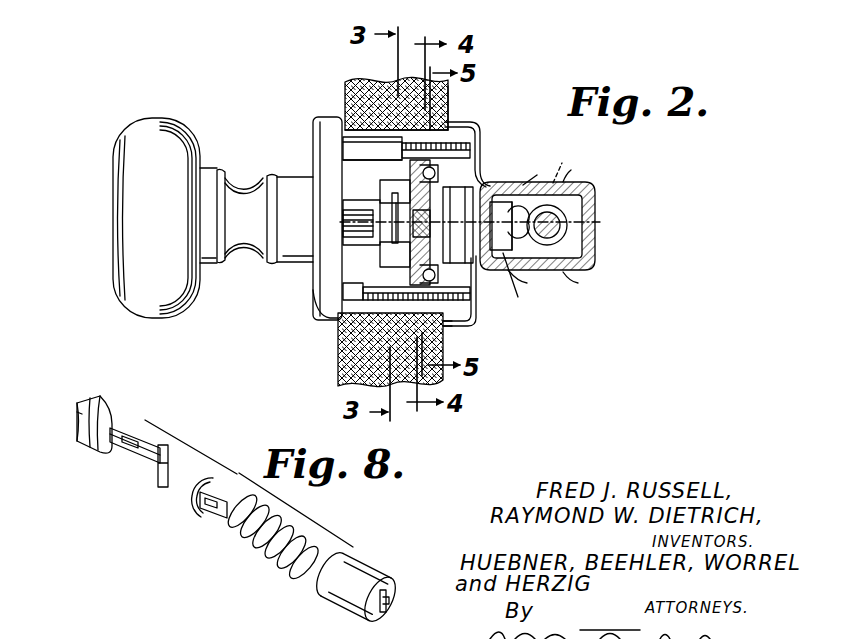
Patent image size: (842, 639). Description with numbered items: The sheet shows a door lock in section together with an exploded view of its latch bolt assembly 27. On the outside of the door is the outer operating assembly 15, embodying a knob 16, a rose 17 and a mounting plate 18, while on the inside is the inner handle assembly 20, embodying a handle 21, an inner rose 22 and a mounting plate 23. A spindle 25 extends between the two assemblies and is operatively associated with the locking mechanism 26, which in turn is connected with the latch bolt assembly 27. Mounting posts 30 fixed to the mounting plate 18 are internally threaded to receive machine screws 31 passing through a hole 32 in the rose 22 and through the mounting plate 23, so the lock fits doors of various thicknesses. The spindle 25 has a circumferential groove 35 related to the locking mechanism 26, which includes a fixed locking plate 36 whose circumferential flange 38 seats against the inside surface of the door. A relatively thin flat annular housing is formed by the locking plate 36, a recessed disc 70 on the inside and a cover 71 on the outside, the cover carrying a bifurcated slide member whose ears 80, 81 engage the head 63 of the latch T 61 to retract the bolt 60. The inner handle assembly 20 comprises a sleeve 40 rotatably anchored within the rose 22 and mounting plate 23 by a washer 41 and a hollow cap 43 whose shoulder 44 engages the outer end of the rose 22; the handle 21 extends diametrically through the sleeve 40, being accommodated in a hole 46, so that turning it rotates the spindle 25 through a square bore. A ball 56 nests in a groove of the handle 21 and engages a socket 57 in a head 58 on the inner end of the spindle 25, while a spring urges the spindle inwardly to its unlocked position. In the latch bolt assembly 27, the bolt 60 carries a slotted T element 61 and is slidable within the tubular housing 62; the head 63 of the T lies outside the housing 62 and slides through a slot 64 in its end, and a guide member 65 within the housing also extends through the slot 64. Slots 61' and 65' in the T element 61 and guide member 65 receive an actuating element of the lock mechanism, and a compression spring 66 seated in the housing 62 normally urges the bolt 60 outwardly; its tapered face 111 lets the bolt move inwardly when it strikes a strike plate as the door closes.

In FIG. 2, the outer operating assembly 15 is at (199, 127).
In FIG. 2, the knob 16 is at (164, 121).
In FIG. 2, the rose 17 is at (317, 118).
In FIG. 2, the mounting plate 18 is at (330, 318).
In FIG. 2, the inner handle assembly 20 is at (529, 137).
In FIG. 2, the handle 21 is at (590, 192).
In FIG. 2, the inner rose 22 is at (470, 322).
In FIG. 2, the mounting plate 23 is at (456, 330).
In FIG. 2, the spindle 25 is at (380, 202).
In FIG. 2, the locking mechanism 26 is at (406, 271).
In FIG. 2, the latch bolt assembly 27 is at (342, 254).
In FIG. 8, the latch bolt assembly 27 is at (166, 417).
In FIG. 2, the mounting posts 30 is at (342, 150).
In FIG. 2, the machine screws 31 is at (462, 128).
In FIG. 2, the hole 32 is at (538, 173).
In FIG. 2, the circumferential groove 35 is at (472, 192).
In FIG. 2, the fixed locking plate 36 is at (448, 114).
In FIG. 2, the circumferential flange 38 is at (463, 118).
In FIG. 2, the sleeve 40 is at (582, 282).
In FIG. 2, the washer 41 is at (498, 187).
In FIG. 2, the hollow cap 43 is at (593, 220).
In FIG. 2, the shoulder 44 is at (528, 281).
In FIG. 2, the hole 46 is at (563, 238).
In FIG. 2, the ball 56 is at (579, 173).
In FIG. 2, the socket 57 is at (565, 163).
In FIG. 2, the head 58 is at (520, 284).
In FIG. 2, the bolt 60 is at (389, 183).
In FIG. 8, the bolt 60 is at (101, 415).
In FIG. 8, the slotted T element 61 is at (135, 467).
In FIG. 8, the slot 61' is at (112, 458).
In FIG. 8, the tubular housing 62 is at (345, 599).
In FIG. 2, the head 63 is at (410, 195).
In FIG. 8, the head 63 is at (161, 488).
In FIG. 2, the slot 64 is at (392, 237).
In FIG. 8, the slot 64 is at (392, 604).
In FIG. 2, the guide member 65 is at (331, 222).
In FIG. 8, the guide member 65 is at (209, 518).
In FIG. 8, the slot 65' is at (190, 528).
In FIG. 8, the compression spring 66 is at (280, 560).
In FIG. 2, the disc 70 is at (468, 158).
In FIG. 2, the cover 71 is at (385, 327).
In FIG. 2, the ear 80 is at (372, 150).
In FIG. 2, the ear 81 is at (401, 291).
In FIG. 8, the tapered face 111 is at (77, 414).